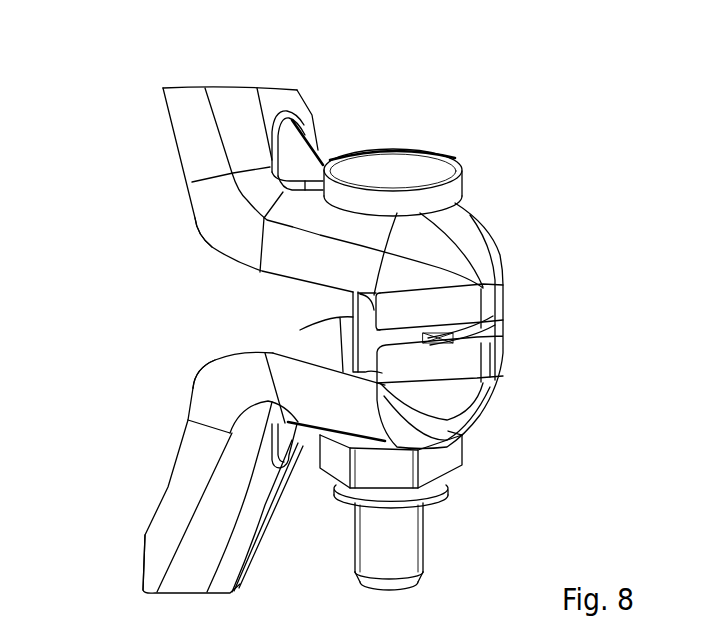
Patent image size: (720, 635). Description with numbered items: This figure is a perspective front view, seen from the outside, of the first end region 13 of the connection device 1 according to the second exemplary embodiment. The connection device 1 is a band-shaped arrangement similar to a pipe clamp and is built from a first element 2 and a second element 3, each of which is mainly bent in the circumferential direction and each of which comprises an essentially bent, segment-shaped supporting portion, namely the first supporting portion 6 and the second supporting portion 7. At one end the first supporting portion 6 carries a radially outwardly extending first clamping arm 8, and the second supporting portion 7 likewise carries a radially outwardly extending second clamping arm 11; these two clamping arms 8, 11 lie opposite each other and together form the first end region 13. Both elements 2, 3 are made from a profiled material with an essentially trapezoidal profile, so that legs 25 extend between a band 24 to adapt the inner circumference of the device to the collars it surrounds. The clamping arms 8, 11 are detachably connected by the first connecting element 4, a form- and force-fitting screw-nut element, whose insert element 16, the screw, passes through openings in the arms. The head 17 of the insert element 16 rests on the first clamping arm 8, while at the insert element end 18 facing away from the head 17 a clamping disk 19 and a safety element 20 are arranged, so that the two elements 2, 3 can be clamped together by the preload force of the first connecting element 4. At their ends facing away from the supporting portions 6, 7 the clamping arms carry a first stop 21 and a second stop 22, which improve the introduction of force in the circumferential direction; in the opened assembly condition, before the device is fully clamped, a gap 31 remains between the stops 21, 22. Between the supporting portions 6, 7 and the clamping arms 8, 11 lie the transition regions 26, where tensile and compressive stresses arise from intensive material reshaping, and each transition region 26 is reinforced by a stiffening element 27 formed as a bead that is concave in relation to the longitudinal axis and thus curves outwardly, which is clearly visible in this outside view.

The connection device 1 is at (349, 308).
The first element 2 is at (261, 189).
The first supporting portion 6 is at (166, 100).
The second element 3 is at (216, 455).
The second supporting portion 7 is at (216, 455).
The first connecting element 4 is at (305, 314).
The first clamping arm 8 is at (411, 310).
The second clamping arm 11 is at (473, 415).
The first end region 13 is at (305, 308).
The insert element 16 is at (349, 304).
The head 17 is at (380, 162).
The insert element end 18 is at (389, 590).
The clamping disk 19 is at (448, 497).
The safety element 20 is at (451, 465).
The first stop 21 is at (494, 292).
The second stop 22 is at (497, 350).
The band 24 is at (248, 543).
The legs 25 is at (153, 557).
The transition regions 26 is at (197, 247).
The stiffening element 27 is at (294, 140).
The gap 31 is at (494, 323).